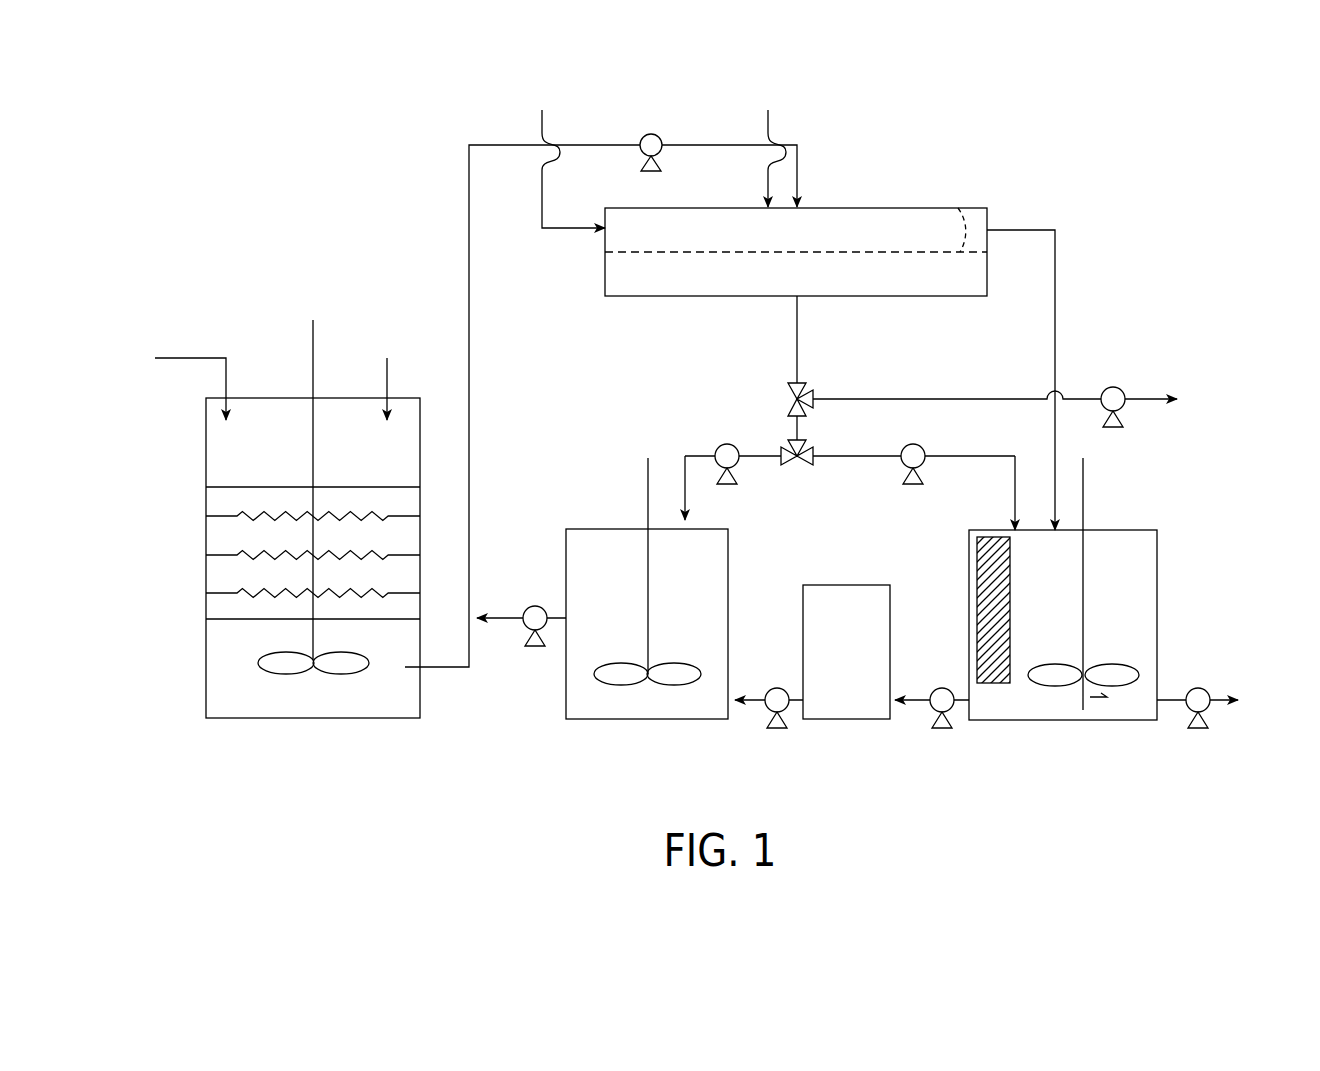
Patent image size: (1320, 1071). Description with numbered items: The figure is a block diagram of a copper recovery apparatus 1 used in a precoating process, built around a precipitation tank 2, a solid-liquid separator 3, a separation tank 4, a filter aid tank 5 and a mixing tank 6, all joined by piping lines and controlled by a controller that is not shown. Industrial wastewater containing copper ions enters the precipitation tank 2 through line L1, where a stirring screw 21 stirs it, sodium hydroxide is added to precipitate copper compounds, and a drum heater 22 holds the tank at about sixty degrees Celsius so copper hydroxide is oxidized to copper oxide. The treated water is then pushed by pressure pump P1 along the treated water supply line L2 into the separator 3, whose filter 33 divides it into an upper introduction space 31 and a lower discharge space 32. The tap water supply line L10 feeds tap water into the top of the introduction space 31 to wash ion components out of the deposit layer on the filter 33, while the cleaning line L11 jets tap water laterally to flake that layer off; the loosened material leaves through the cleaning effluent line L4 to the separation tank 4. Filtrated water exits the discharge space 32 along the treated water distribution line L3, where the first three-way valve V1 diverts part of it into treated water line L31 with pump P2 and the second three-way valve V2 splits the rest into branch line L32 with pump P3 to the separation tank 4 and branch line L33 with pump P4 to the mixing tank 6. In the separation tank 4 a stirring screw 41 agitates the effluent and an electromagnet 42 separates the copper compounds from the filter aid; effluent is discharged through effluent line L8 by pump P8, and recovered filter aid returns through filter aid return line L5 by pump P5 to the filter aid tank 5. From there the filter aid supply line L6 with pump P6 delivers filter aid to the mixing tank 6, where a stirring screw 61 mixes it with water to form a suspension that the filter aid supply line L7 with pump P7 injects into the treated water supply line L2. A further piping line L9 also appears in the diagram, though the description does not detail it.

The copper recovery apparatus 1 is at (937, 84).
The precipitation tank 2 is at (310, 719).
The stirring screw 21 is at (258, 663).
The drum heater 22 is at (275, 500).
The solid-liquid separator 3 is at (849, 207).
The introduction space 31 is at (905, 222).
The discharge space 32 is at (962, 297).
The filter 33 is at (958, 207).
The separation tank 4 is at (1080, 721).
The stirring screw 41 is at (1116, 664).
The electromagnet 42 is at (993, 684).
The filter aid tank 5 is at (843, 720).
The mixing tank 6 is at (647, 720).
The stirring screw 61 is at (607, 678).
The line L1 is at (226, 372).
The treated water supply line L2 is at (469, 297).
The treated water distribution line L3 is at (796, 336).
The cleaning effluent line L4 is at (1055, 270).
The filter aid return line L5 is at (898, 706).
The filter aid supply line L6 is at (737, 706).
The filter aid supply line L7 is at (503, 626).
The effluent line L8 is at (1178, 695).
The NaOH supply line L9 is at (387, 372).
The tap water supply line L10 is at (766, 176).
The cleaning line L11 is at (542, 178).
The treated water line L31 is at (997, 400).
The branch line L32 is at (1014, 500).
The branch line L33 is at (683, 492).
The pressure pump P1 is at (651, 134).
The pump P2 is at (1113, 386).
The pump P3 is at (921, 446).
The pump P4 is at (721, 445).
The pump P5 is at (942, 688).
The pump P6 is at (777, 688).
The pump P7 is at (535, 606).
The pump P8 is at (1200, 688).
The first three-way valve V1 is at (787, 395).
The second three-way valve V2 is at (816, 448).